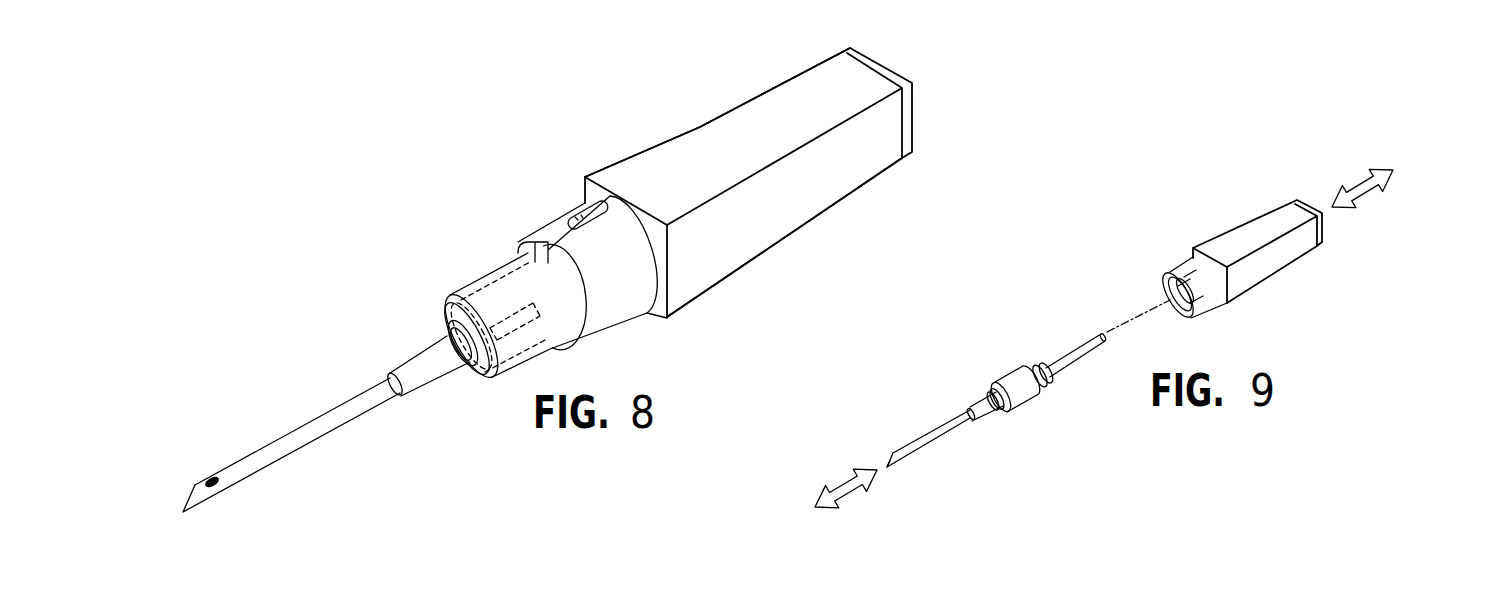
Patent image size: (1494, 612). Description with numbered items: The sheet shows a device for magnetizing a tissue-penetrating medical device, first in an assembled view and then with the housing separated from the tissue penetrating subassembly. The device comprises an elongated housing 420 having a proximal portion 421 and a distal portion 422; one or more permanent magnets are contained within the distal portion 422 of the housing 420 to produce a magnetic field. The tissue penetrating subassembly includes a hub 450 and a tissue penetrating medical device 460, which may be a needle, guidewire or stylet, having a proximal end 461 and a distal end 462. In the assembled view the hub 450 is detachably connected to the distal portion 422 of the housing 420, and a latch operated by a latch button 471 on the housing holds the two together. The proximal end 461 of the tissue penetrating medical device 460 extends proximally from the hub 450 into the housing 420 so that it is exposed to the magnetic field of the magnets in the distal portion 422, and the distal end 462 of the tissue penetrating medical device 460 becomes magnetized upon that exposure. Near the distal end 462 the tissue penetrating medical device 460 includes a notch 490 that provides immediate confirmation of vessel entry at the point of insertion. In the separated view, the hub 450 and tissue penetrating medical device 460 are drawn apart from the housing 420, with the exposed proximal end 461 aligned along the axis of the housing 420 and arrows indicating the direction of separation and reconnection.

In FIG. 8, the housing 420 is at (837, 180).
In FIG. 9, the housing 420 is at (1232, 248).
In FIG. 8, the proximal portion 421 is at (807, 75).
In FIG. 8, the distal portion 422 is at (687, 303).
In FIG. 9, the hub 450 is at (1023, 397).
In FIG. 8, the tissue penetrating medical device 460 is at (332, 403).
In FIG. 9, the tissue penetrating medical device 460 is at (962, 417).
In FIG. 9, the proximal end 461 is at (1090, 347).
In FIG. 9, the distal end 462 is at (905, 450).
In FIG. 8, the latch button 471 is at (582, 207).
In FIG. 8, the notch 490 is at (215, 472).